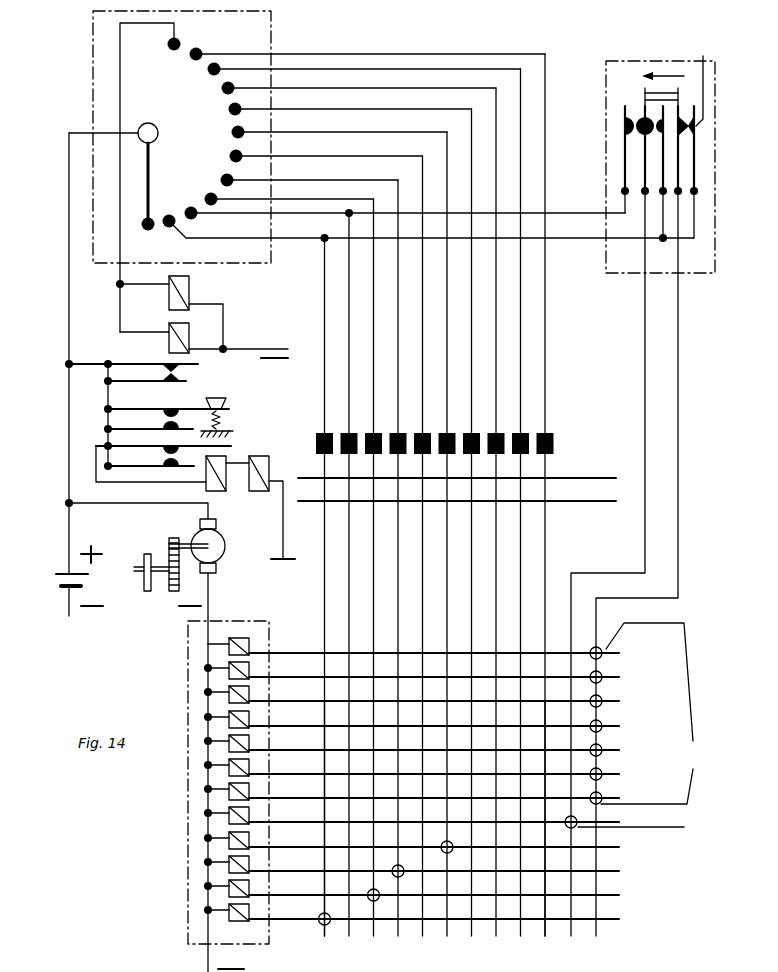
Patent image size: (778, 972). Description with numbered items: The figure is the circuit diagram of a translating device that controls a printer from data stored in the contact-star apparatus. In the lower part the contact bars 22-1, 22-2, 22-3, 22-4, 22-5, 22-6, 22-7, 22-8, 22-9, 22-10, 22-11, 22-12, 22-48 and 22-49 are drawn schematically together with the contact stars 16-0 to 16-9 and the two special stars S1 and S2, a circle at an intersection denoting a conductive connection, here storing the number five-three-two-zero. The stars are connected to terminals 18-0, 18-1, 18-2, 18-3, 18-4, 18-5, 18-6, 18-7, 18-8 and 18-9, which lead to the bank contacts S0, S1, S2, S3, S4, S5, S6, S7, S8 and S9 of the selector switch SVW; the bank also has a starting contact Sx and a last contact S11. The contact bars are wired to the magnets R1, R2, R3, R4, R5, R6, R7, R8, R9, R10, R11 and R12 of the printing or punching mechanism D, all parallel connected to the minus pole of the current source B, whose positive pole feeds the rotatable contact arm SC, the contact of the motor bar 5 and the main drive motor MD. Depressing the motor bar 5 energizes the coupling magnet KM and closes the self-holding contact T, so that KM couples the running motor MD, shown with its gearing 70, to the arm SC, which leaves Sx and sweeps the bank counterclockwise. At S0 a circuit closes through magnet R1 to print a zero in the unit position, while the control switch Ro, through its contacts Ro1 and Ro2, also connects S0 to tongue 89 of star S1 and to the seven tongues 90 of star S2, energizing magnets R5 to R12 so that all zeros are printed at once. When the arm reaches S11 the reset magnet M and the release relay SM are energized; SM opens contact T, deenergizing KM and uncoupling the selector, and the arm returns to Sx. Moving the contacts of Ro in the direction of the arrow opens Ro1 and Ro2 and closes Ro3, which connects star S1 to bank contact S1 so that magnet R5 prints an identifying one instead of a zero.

The selector switch SVW is at (270, 28).
The contact arm SC is at (150, 170).
The bank contact S11 is at (167, 43).
The bank contact S9 is at (195, 53).
The bank contact S8 is at (213, 68).
The bank contact S7 is at (227, 87).
The bank contact S6 is at (234, 108).
The bank contact S5 is at (237, 131).
The bank contact S4 is at (235, 155).
The bank contact S3 is at (226, 179).
The bank contact S2 is at (210, 198).
The bank contact S1 is at (190, 212).
The contact SX Sx is at (147, 223).
The bank contact S0 is at (168, 220).
The terminal 18-0 is at (319, 432).
The terminal 18-1 is at (343, 432).
The terminal 18-2 is at (368, 432).
The terminal 18-3 is at (392, 432).
The terminal 18-4 is at (417, 432).
The terminal 18-5 is at (441, 432).
The terminal 18-6 is at (466, 432).
The terminal 18-7 is at (490, 432).
The terminal 18-8 is at (515, 432).
The terminal 18-9 is at (540, 432).
The motor bar 5 is at (220, 397).
The contact star 16-0 is at (322, 935).
The contact star 16-9 is at (542, 935).
The contact bar 22-49 is at (585, 477).
The contact bar 22-48 is at (585, 500).
The reset magnet M is at (190, 283).
The release relay SM is at (190, 340).
The current source B is at (80, 374).
The self-holding contact T is at (165, 449).
The coupling magnet KM is at (267, 457).
The main drive motor MD is at (225, 545).
The gear drive 70 is at (148, 550).
The printing or punching mechanism D is at (222, 618).
The magnet R12 is at (249, 640).
The magnet R11 is at (249, 664).
The magnet R10 is at (249, 688).
The magnet R9 is at (249, 713).
The magnet R8 is at (249, 737).
The magnet R7 is at (249, 761).
The magnet R6 is at (249, 785).
The magnet R5 is at (249, 809).
The magnet R4 is at (249, 834).
The magnet R3 is at (249, 858).
The magnet R2 is at (249, 882).
The magnet R1 is at (249, 906).
The contact bar 22-12 is at (618, 652).
The contact bar 22-11 is at (618, 676).
The contact bar 22-10 is at (618, 700).
The contact bar 22-9 is at (618, 725).
The contact bar 22-8 is at (618, 749).
The contact bar 22-7 is at (618, 773).
The contact bar 22-6 is at (618, 797).
The contact bar 22-5 is at (618, 821).
The contact bar 22-4 is at (618, 846).
The contact bar 22-3 is at (618, 870).
The contact bar 22-2 is at (618, 894).
The contact bar 22-1 is at (618, 918).
The points of star S2 90 is at (651, 713).
The point of star S1 89 is at (641, 834).
The control switch Ro is at (606, 60).
The contact Ro1 is at (656, 130).
The contact Ro2 is at (693, 137).
The contact Ro3 is at (616, 125).